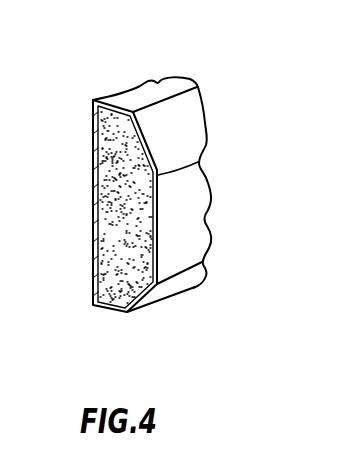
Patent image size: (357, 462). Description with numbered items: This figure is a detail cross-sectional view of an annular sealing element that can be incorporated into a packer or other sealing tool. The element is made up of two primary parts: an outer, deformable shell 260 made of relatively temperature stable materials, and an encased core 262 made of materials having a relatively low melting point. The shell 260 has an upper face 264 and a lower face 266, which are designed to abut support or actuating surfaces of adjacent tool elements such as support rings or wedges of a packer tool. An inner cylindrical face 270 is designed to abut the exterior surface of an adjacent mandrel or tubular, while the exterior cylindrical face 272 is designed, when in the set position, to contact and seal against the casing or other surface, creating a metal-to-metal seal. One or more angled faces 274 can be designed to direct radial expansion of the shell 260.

The shell 260 is at (177, 194).
The core 262 is at (140, 250).
The upper face 264 is at (162, 88).
The lower face 266 is at (117, 313).
The inner cylindrical face 270 is at (93, 193).
The exterior cylindrical face 272 is at (187, 220).
The angled face 274 is at (172, 120).